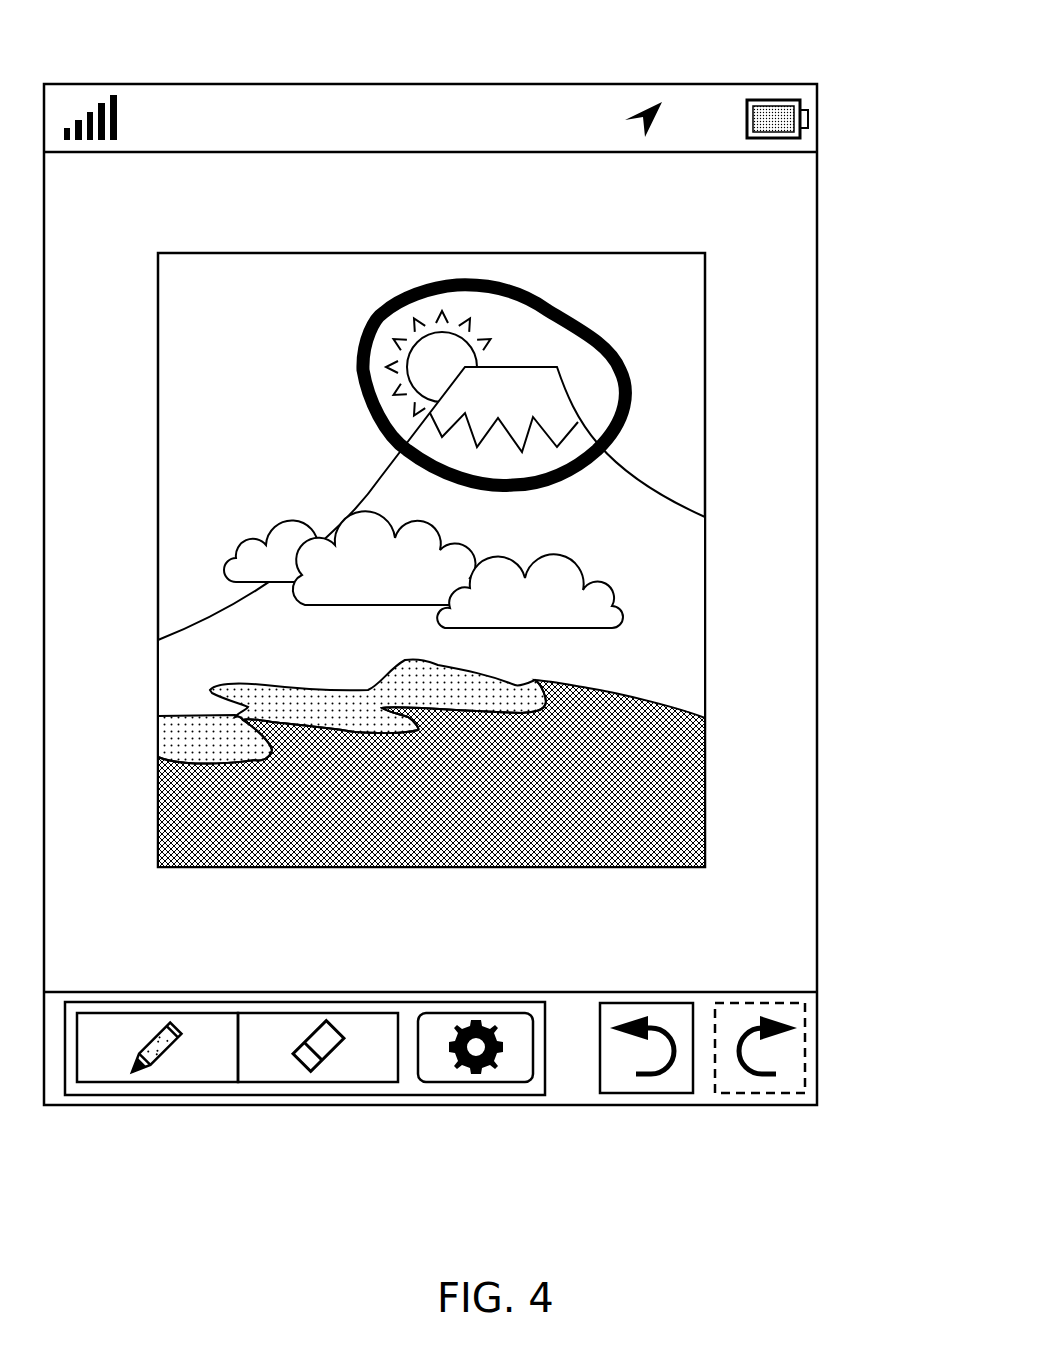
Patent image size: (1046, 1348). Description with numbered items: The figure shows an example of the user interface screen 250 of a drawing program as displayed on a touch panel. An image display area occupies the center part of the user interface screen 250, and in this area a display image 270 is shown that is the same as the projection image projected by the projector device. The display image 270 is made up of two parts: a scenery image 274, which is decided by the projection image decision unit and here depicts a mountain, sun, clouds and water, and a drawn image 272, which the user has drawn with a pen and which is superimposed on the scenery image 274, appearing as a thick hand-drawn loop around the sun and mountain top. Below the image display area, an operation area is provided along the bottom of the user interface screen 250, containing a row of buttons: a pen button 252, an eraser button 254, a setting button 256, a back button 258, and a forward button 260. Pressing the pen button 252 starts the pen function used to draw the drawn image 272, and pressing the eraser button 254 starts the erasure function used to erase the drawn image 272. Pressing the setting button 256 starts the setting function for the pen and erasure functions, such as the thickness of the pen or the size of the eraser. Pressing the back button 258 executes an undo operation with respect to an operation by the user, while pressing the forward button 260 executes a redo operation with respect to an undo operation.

The user interface screen 250 is at (808, 64).
The pen button 252 is at (200, 1070).
The eraser button 254 is at (352, 1070).
The setting button 256 is at (512, 1070).
The back button 258 is at (668, 1082).
The forward button 260 is at (783, 1080).
The display image 270 is at (893, 383).
The drawn image 272 is at (627, 397).
The scenery image 274 is at (623, 583).